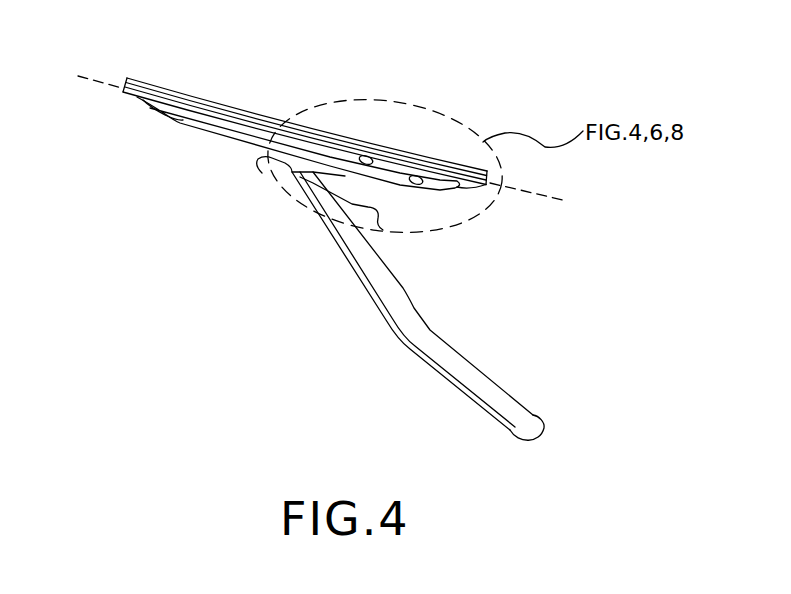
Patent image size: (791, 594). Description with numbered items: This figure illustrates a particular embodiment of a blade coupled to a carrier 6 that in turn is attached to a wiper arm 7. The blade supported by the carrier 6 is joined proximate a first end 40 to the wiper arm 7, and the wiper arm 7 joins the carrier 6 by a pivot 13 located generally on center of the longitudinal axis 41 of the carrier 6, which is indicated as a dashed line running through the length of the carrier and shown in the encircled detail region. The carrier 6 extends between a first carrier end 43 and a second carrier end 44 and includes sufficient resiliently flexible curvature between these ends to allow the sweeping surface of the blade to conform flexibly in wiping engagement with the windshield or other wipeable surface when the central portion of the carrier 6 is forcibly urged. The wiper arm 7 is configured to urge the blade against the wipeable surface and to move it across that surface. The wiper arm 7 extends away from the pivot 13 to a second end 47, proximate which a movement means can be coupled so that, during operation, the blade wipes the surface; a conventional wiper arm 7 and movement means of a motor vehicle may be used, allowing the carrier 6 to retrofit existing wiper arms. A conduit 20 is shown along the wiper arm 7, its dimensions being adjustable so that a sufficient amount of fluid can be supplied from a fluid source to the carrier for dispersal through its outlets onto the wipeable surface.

The carrier 6 is at (176, 92).
The longitudinal axis 41 is at (324, 140).
The second carrier end 44 is at (121, 91).
The first carrier end 43 is at (487, 184).
The pivot 13 is at (266, 173).
The first end 40 is at (383, 230).
The wiper arm 7 is at (410, 330).
The conduit 20 is at (427, 360).
The second end 47 is at (533, 418).